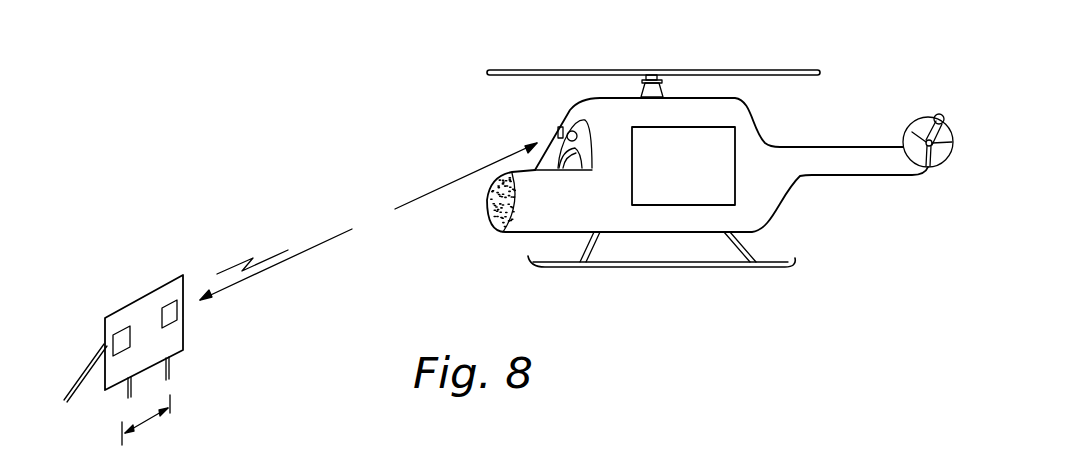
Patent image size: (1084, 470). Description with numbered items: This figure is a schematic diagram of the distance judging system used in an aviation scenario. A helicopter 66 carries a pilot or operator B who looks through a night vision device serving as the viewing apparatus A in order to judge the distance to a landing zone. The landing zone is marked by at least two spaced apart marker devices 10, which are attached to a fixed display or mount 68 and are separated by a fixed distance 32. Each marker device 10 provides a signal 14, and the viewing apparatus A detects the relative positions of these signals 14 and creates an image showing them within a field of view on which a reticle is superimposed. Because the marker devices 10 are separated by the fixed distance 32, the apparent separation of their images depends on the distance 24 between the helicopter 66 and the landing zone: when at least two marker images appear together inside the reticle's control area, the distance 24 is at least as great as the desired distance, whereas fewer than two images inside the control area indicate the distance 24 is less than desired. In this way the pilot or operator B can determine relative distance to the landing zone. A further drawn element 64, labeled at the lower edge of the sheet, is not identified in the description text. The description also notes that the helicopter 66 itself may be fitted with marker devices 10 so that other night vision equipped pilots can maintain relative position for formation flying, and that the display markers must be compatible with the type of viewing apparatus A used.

The marker device 10 is at (124, 330).
The signal 14 is at (240, 260).
The distance 24 is at (368, 221).
The fixed distance between markers 32 is at (148, 421).
The helicopter 64 is at (720, 270).
The helicopter 66 is at (525, 220).
The fixed display or mount 68 is at (166, 300).
The viewing apparatus A is at (554, 133).
The pilot or operator B is at (570, 121).